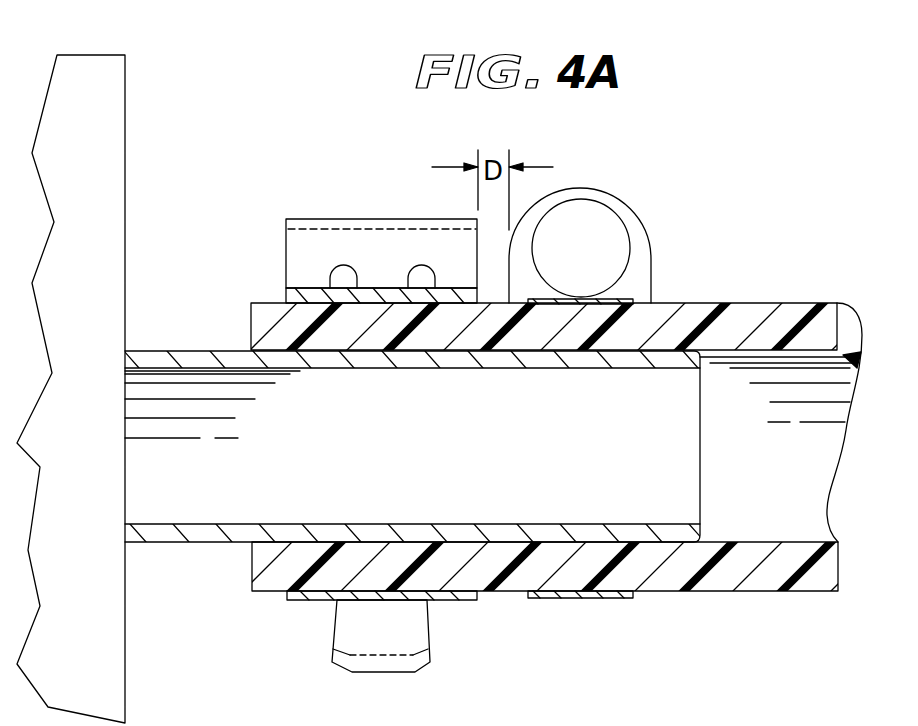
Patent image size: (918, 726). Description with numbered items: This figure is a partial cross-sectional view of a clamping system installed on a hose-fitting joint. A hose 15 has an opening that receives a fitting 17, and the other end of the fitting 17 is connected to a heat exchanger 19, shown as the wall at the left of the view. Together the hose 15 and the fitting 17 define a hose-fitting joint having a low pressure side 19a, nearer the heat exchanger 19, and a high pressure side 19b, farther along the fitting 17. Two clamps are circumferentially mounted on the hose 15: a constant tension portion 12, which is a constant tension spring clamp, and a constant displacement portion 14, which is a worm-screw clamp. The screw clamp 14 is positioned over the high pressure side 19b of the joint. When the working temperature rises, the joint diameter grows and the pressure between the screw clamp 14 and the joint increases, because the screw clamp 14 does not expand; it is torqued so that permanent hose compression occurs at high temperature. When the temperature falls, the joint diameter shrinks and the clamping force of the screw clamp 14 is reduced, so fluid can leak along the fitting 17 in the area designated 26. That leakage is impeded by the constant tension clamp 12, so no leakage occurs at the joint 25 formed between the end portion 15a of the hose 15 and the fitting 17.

The constant tension portion 12 is at (336, 210).
The constant displacement portion 14 is at (606, 180).
The hose 15 is at (752, 303).
The end portion of hose 15a is at (252, 580).
The fitting 17 is at (414, 401).
The heat exchanger 19 is at (125, 670).
The low pressure side 19a is at (328, 352).
The high pressure side 19b is at (570, 353).
The joint 25 is at (251, 558).
The leakage area 26 is at (485, 368).